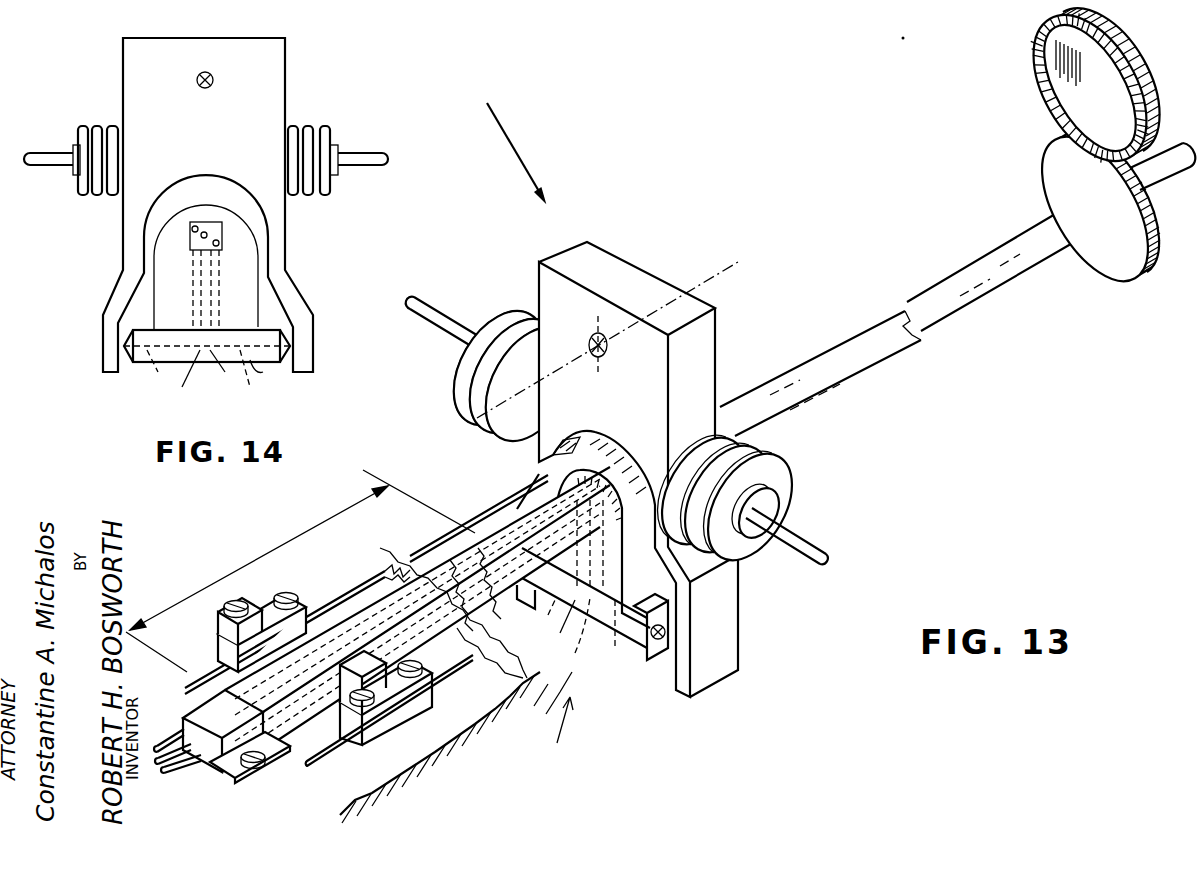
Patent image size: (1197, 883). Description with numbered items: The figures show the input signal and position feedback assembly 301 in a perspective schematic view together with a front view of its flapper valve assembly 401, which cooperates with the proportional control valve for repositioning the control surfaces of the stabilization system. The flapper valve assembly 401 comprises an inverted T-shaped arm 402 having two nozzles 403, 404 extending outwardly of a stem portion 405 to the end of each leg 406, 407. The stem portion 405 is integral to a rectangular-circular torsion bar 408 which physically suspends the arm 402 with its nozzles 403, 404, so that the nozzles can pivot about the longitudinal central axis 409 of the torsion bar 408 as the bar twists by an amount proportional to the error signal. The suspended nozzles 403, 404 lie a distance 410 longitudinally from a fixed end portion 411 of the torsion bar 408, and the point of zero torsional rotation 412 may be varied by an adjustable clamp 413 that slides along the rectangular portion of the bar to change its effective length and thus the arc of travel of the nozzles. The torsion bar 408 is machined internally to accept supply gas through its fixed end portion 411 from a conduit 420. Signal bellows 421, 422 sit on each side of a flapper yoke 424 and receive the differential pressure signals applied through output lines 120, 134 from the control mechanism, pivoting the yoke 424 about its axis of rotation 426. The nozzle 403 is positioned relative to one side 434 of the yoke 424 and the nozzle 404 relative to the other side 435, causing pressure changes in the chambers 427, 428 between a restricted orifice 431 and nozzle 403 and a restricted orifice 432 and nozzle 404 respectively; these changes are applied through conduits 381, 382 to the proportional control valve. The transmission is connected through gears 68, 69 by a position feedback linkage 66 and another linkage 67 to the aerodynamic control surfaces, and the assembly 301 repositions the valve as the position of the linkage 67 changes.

In FIG. 13, the position feedback linkage 66 is at (1007, 283).
In FIG. 13, the linkage 67 is at (1165, 185).
In FIG. 13, the gear 68 is at (1148, 270).
In FIG. 13, the gear 69 is at (1140, 82).
In FIG. 14, the output line 120 is at (350, 152).
In FIG. 13, the output line 120 is at (805, 532).
In FIG. 14, the output line 134 is at (52, 152).
In FIG. 13, the output line 134 is at (453, 315).
In FIG. 13, the input signal and position feedback assembly 301 is at (505, 141).
In FIG. 13, the conduit 381 is at (152, 742).
In FIG. 13, the conduit 382 is at (184, 766).
In FIG. 13, the flapper valve assembly 401 is at (555, 733).
In FIG. 14, the inverted T-shaped arm 402 is at (253, 306).
In FIG. 13, the inverted T-shaped arm 402 is at (584, 574).
In FIG. 14, the nozzle 403 is at (124, 346).
In FIG. 14, the nozzle 404 is at (290, 346).
In FIG. 13, the nozzle 404 is at (667, 650).
In FIG. 14, the stem portion 405 is at (262, 255).
In FIG. 13, the stem portion 405 is at (638, 585).
In FIG. 14, the leg 406 is at (135, 363).
In FIG. 13, the leg 406 is at (548, 618).
In FIG. 14, the leg 407 is at (271, 376).
In FIG. 13, the leg 407 is at (635, 653).
In FIG. 14, the torsion bar 408 is at (190, 236).
In FIG. 13, the torsion bar 408 is at (320, 718).
In FIG. 14, the longitudinal central axis 409 is at (205, 236).
In FIG. 13, the longitudinal central axis 409 is at (820, 373).
In FIG. 13, the distance 410 is at (267, 553).
In FIG. 13, the fixed end portion 411 is at (222, 771).
In FIG. 13, the point of zero torsional rotation 412 is at (313, 707).
In FIG. 13, the adjustable clamp 413 is at (248, 612).
In FIG. 13, the conduit 420 is at (160, 772).
In FIG. 14, the signal bellows 421 is at (95, 127).
In FIG. 13, the signal bellows 421 is at (515, 415).
In FIG. 14, the signal bellows 422 is at (300, 125).
In FIG. 13, the signal bellows 422 is at (752, 452).
In FIG. 13, the flapper yoke 424 is at (633, 272).
In FIG. 14, the axis of rotation 426 is at (212, 76).
In FIG. 13, the axis of rotation 426 is at (717, 272).
In FIG. 14, the chamber 427 is at (157, 371).
In FIG. 13, the chamber 427 is at (554, 617).
In FIG. 14, the chamber 428 is at (254, 378).
In FIG. 13, the chamber 428 is at (614, 633).
In FIG. 14, the restricted orifice 431 is at (184, 378).
In FIG. 13, the restricted orifice 431 is at (560, 627).
In FIG. 14, the restricted orifice 432 is at (227, 371).
In FIG. 13, the restricted orifice 432 is at (574, 636).
In FIG. 14, the side of the flapper yoke 434 is at (103, 365).
In FIG. 13, the side of the flapper yoke 434 is at (540, 600).
In FIG. 14, the side of the flapper yoke 435 is at (313, 365).
In FIG. 13, the side of the flapper yoke 435 is at (715, 680).